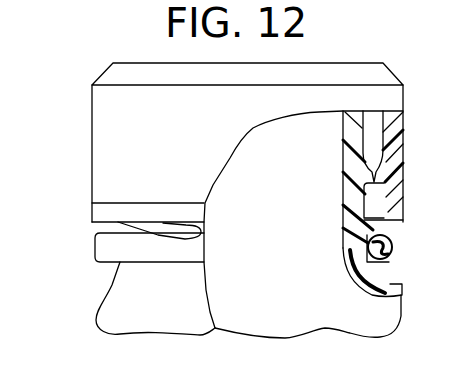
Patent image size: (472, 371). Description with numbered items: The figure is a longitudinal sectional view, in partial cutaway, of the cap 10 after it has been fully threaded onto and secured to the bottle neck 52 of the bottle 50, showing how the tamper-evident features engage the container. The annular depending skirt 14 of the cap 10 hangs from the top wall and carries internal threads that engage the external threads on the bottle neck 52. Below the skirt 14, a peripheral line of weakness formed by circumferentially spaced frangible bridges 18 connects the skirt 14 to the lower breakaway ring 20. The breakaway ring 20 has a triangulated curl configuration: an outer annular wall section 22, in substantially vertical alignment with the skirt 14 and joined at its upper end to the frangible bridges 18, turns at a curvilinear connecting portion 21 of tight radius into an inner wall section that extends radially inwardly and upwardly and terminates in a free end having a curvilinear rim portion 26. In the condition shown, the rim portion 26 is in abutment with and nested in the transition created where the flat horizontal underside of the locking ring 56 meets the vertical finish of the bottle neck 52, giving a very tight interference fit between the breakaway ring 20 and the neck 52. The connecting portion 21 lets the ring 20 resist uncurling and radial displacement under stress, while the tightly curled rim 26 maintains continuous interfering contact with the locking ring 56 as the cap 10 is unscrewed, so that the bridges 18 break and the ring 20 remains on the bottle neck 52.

The cap 10 is at (84, 132).
The depending skirt 14 is at (396, 133).
The frangible bridges 18 is at (163, 224).
The breakaway ring 20 is at (95, 248).
The curvilinear connecting portion 21 is at (389, 263).
The outer annular wall section 22 is at (393, 236).
The curvilinear rim portion 26 is at (366, 242).
The bottle 50 is at (107, 290).
The bottle neck 52 is at (300, 211).
The locking ring 56 is at (391, 205).